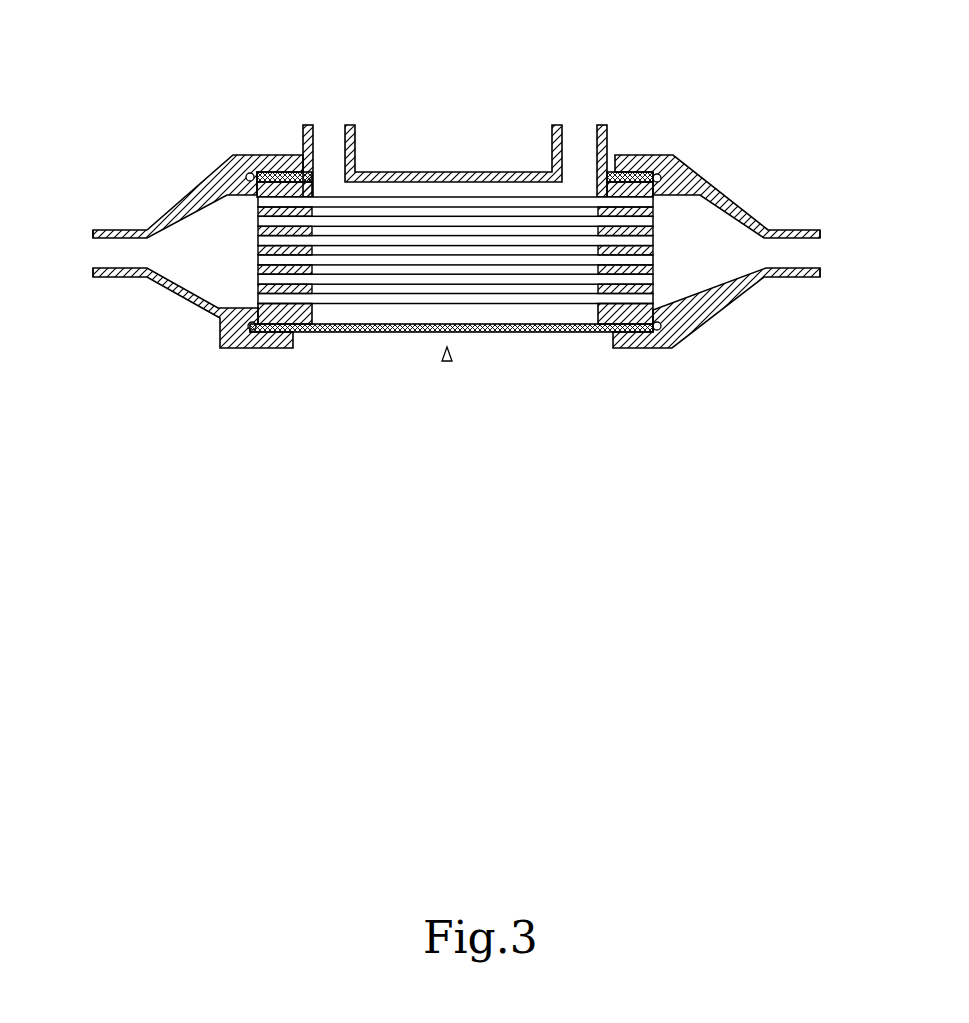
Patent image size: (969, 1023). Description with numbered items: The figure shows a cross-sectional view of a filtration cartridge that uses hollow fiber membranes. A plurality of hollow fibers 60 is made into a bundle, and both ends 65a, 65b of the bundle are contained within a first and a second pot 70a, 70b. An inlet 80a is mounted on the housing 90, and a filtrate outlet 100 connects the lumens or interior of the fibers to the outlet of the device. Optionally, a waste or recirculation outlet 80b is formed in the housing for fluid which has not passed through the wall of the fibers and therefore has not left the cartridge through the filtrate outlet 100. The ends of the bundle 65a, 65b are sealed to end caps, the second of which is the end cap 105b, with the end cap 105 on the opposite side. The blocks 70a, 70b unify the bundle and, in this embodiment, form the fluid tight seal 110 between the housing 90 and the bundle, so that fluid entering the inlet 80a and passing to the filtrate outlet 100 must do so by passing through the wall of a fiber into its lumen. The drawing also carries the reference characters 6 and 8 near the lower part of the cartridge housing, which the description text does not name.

The lower housing part 6 is at (633, 348).
The base plate 8 is at (522, 335).
The hollow fibers 60 is at (473, 200).
The first end of the bundle 65a is at (660, 158).
The second end of the bundle 65b is at (312, 197).
The first pot 70a is at (600, 292).
The second pot 70b is at (312, 290).
The inlet 80a is at (577, 140).
The waste or recirculation outlet 80b is at (328, 133).
The housing 90 is at (447, 361).
The filtrate outlet 100 is at (108, 253).
The housing 105 is at (717, 198).
The second end cap 105b is at (180, 297).
The fluid tight seal 110 is at (255, 252).